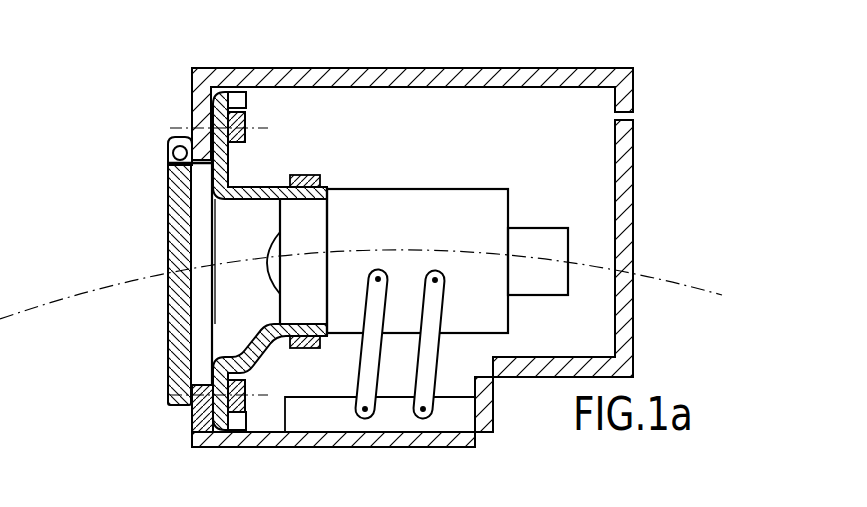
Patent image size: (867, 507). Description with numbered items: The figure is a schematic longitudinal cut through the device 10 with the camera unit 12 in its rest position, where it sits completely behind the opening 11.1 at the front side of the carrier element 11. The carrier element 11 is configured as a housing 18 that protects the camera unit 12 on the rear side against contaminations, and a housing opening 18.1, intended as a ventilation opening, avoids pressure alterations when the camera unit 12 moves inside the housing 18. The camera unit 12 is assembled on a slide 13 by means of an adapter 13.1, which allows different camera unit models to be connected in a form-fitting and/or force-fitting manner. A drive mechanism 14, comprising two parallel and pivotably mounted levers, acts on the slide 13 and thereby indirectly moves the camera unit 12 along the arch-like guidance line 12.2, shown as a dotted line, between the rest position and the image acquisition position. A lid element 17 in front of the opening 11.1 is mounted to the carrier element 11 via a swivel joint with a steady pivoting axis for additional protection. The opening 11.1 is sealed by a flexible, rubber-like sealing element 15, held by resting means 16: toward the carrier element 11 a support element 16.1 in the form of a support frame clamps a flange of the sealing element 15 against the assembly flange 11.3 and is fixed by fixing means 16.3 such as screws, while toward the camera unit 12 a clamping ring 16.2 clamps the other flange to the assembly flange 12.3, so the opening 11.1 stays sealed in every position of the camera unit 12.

The device 10 is at (145, 65).
The carrier element 11 is at (457, 417).
The opening 11.1 is at (200, 210).
The assembly flange 11.3 is at (197, 417).
The camera unit 12 is at (460, 207).
The guidance line 12.2 is at (529, 258).
The assembly flange 12.3 is at (305, 228).
The slide 13 is at (417, 261).
The adapter 13.1 is at (417, 261).
The drive mechanism 14 is at (380, 380).
The sealing element 15 is at (258, 189).
The resting means 16 is at (248, 123).
The support element 16.1 is at (247, 403).
The clamping ring 16.2 is at (308, 176).
The fixing means 16.3 is at (174, 128).
The lid element 17 is at (170, 340).
The housing 18 is at (395, 72).
The housing opening 18.1 is at (633, 118).